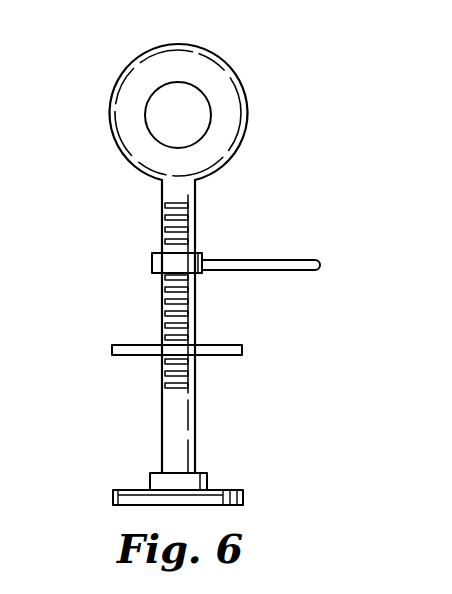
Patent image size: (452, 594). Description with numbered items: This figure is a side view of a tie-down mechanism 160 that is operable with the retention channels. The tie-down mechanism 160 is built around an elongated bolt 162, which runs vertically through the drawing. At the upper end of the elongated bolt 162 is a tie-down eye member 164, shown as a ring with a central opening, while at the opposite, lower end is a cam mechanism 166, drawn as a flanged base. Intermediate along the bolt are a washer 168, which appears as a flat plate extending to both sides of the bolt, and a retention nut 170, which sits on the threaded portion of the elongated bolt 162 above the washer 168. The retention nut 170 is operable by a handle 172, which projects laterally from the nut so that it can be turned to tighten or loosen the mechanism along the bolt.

The tie-down mechanism 160 is at (195, 263).
The elongated bolt 162 is at (195, 220).
The tie-down eye member 164 is at (115, 85).
The cam mechanism 166 is at (233, 490).
The washer 168 is at (233, 345).
The retention nut 170 is at (152, 262).
The handle 172 is at (303, 260).